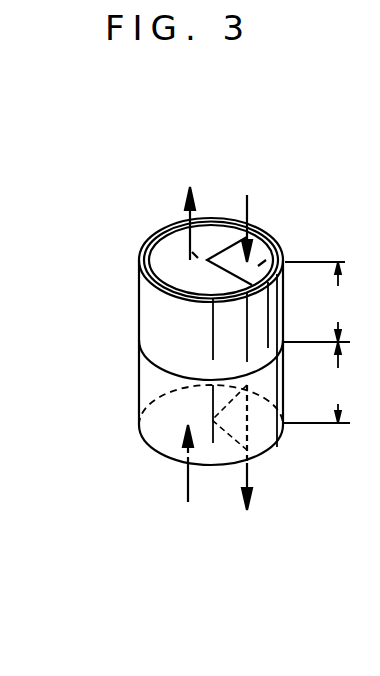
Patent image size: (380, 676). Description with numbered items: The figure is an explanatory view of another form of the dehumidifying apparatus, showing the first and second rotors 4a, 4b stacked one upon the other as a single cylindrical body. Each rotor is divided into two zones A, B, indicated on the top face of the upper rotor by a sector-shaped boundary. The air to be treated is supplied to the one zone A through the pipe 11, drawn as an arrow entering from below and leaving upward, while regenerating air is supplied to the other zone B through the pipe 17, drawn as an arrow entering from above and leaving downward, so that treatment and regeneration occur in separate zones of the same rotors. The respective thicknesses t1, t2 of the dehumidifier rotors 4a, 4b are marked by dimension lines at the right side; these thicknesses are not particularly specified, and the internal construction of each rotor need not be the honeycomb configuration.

The first rotor 4a is at (138, 380).
The second rotor 4b is at (137, 308).
The pipe 17 is at (247, 208).
The pipe 11 is at (186, 480).
The zone A is at (157, 232).
The zone B is at (279, 252).
The thickness t1 is at (316, 302).
The thickness t2 is at (316, 382).